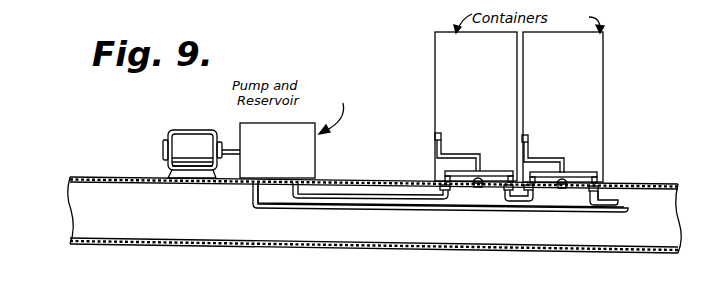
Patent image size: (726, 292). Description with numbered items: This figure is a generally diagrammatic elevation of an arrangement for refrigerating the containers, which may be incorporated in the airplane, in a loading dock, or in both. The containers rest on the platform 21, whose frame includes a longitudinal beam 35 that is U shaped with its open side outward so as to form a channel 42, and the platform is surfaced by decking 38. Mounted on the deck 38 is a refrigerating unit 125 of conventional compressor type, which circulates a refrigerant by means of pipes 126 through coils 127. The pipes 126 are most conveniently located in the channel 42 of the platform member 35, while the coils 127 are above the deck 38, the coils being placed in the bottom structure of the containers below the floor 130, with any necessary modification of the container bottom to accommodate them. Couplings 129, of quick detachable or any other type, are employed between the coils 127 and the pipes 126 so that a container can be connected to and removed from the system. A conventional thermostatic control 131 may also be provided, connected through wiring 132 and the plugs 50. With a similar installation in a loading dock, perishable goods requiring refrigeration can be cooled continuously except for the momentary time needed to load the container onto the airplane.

The platform 21 is at (98, 208).
The longitudinal beam 35 is at (183, 244).
The decking 38 is at (92, 177).
The channel 42 is at (130, 222).
The plug 50 is at (567, 193).
The refrigerating unit 125 is at (234, 131).
The pipe 126 is at (300, 209).
The coil 127 is at (570, 172).
The coupling 129 is at (449, 192).
The floor 130 is at (491, 168).
The thermostatic control 131 is at (434, 136).
The wiring 132 is at (456, 153).